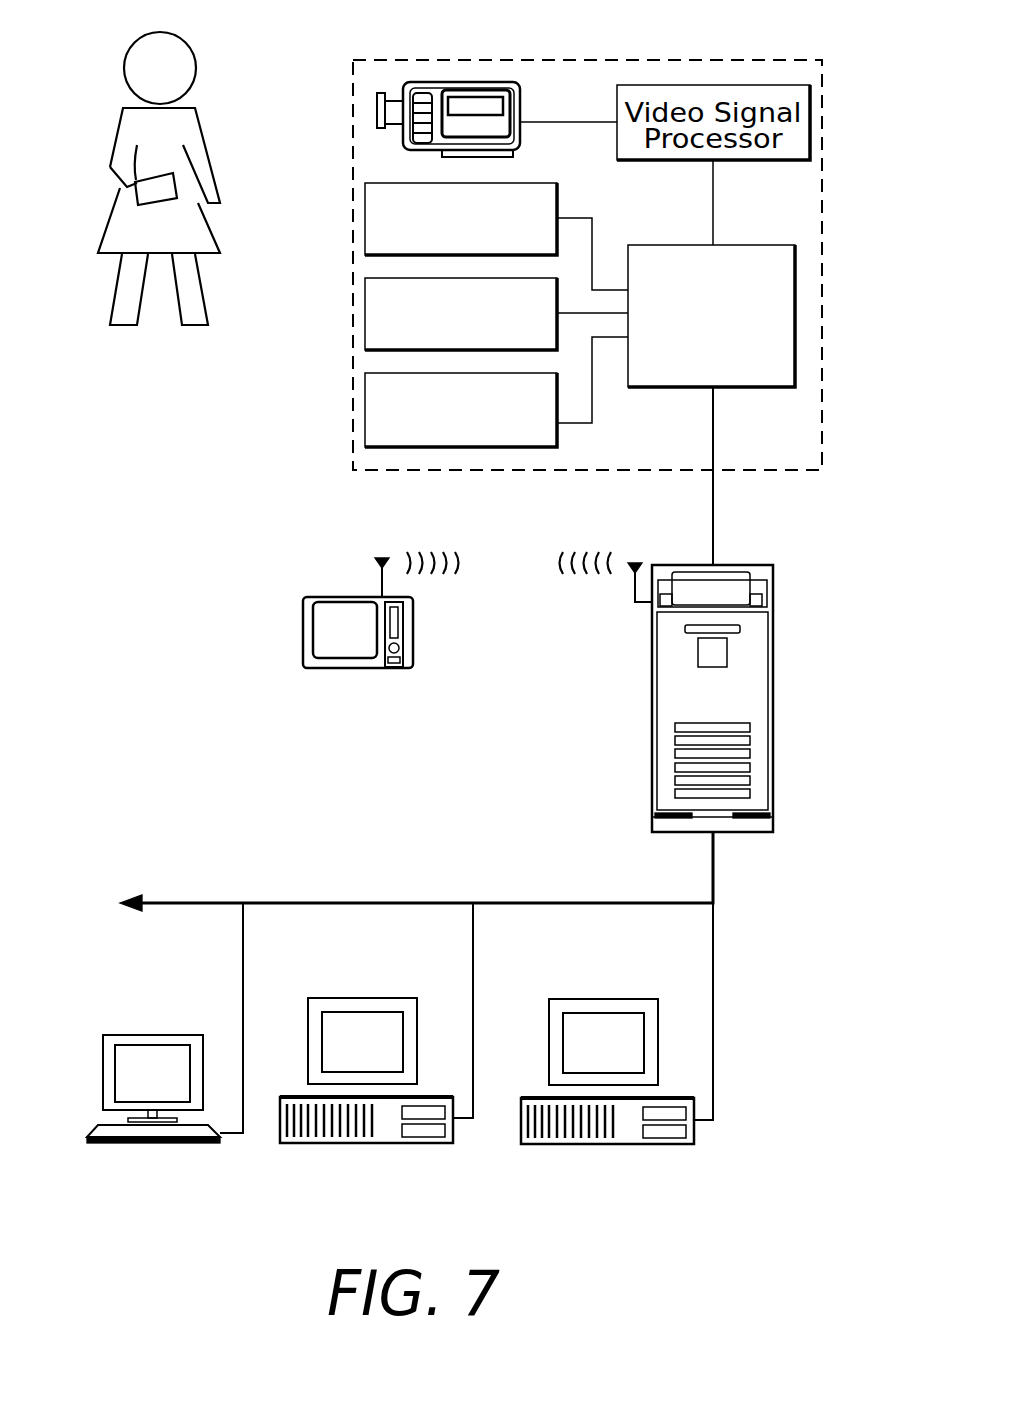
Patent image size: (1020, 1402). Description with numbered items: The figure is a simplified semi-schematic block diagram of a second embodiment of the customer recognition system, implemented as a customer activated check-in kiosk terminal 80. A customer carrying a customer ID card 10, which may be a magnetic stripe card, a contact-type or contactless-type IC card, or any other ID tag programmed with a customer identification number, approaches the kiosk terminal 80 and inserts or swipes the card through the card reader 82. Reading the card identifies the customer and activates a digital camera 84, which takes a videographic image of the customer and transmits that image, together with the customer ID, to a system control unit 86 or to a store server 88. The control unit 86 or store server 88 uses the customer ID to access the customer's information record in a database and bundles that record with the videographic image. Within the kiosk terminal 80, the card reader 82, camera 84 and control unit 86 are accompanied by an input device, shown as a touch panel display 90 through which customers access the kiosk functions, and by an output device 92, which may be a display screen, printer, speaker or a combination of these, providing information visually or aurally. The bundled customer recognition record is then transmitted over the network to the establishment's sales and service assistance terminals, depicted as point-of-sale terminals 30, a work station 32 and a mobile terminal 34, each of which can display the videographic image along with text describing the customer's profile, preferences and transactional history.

The customer ID card 10 is at (150, 204).
The point-of-sale terminal 30 is at (372, 998).
The work station 32 is at (152, 1035).
The mobile terminal 34 is at (348, 597).
The kiosk terminal 80 is at (607, 60).
The card reader 82 is at (365, 323).
The digital camera 84 is at (447, 82).
The control unit 86 is at (762, 245).
The store server 88 is at (683, 565).
The touch panel display 90 is at (365, 228).
The output device 92 is at (365, 433).